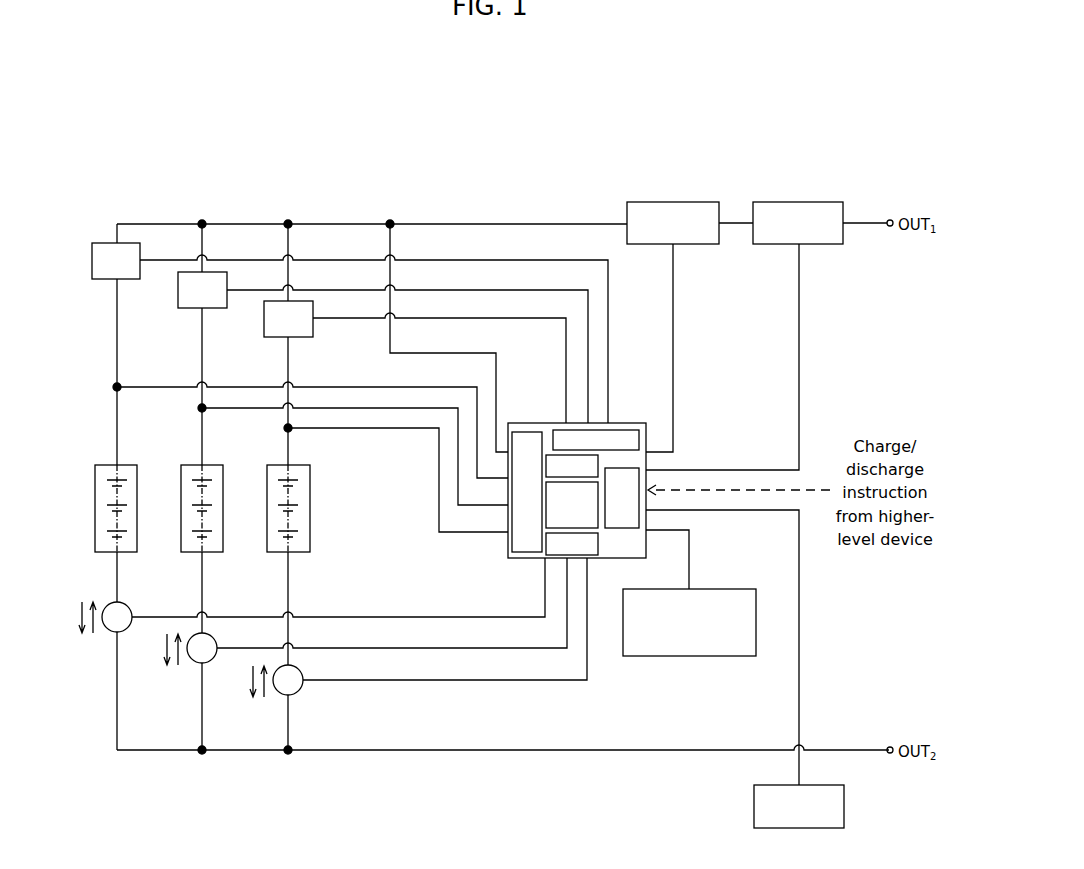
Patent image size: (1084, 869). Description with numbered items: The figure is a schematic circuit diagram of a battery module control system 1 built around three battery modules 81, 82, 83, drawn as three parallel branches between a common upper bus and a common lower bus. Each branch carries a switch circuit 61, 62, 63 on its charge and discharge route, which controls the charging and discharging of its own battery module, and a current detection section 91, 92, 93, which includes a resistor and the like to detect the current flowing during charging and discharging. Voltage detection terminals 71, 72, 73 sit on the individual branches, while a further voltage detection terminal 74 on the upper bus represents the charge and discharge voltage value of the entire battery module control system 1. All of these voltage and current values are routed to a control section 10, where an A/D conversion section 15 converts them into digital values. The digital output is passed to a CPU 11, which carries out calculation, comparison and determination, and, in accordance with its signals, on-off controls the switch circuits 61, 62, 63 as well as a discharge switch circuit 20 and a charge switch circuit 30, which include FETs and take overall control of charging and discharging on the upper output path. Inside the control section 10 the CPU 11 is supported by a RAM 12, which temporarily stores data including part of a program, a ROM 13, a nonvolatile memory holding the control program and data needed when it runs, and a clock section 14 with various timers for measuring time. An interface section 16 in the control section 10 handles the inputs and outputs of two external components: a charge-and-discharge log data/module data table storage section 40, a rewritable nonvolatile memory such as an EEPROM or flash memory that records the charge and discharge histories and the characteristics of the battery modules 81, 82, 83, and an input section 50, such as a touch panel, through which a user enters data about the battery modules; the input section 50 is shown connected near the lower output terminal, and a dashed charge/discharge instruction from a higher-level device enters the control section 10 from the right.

The battery module control system 1 is at (483, 166).
The control section 10 is at (508, 551).
The CPU 11 is at (572, 505).
The RAM 12 is at (592, 554).
The ROM 13 is at (549, 461).
The clock section 14 is at (627, 529).
The A/D conversion section 15 is at (527, 553).
The interface section 16 is at (617, 441).
The discharge switch circuit 20 is at (672, 202).
The charge switch circuit 30 is at (798, 202).
The charge-and-discharge log data/module data table storage section 40 is at (689, 657).
The input section 50 is at (754, 808).
The switch circuit 61 is at (95, 279).
The switch circuit 62 is at (181, 308).
The switch circuit 63 is at (267, 337).
The voltage detection terminal 71 is at (121, 390).
The voltage detection terminal 72 is at (206, 411).
The voltage detection terminal 73 is at (292, 431).
The voltage detection terminal 74 is at (383, 216).
The battery module 81 is at (128, 553).
The battery module 82 is at (214, 553).
The battery module 83 is at (301, 553).
The current detection section 91 is at (112, 631).
The current detection section 92 is at (198, 663).
The current detection section 93 is at (297, 695).